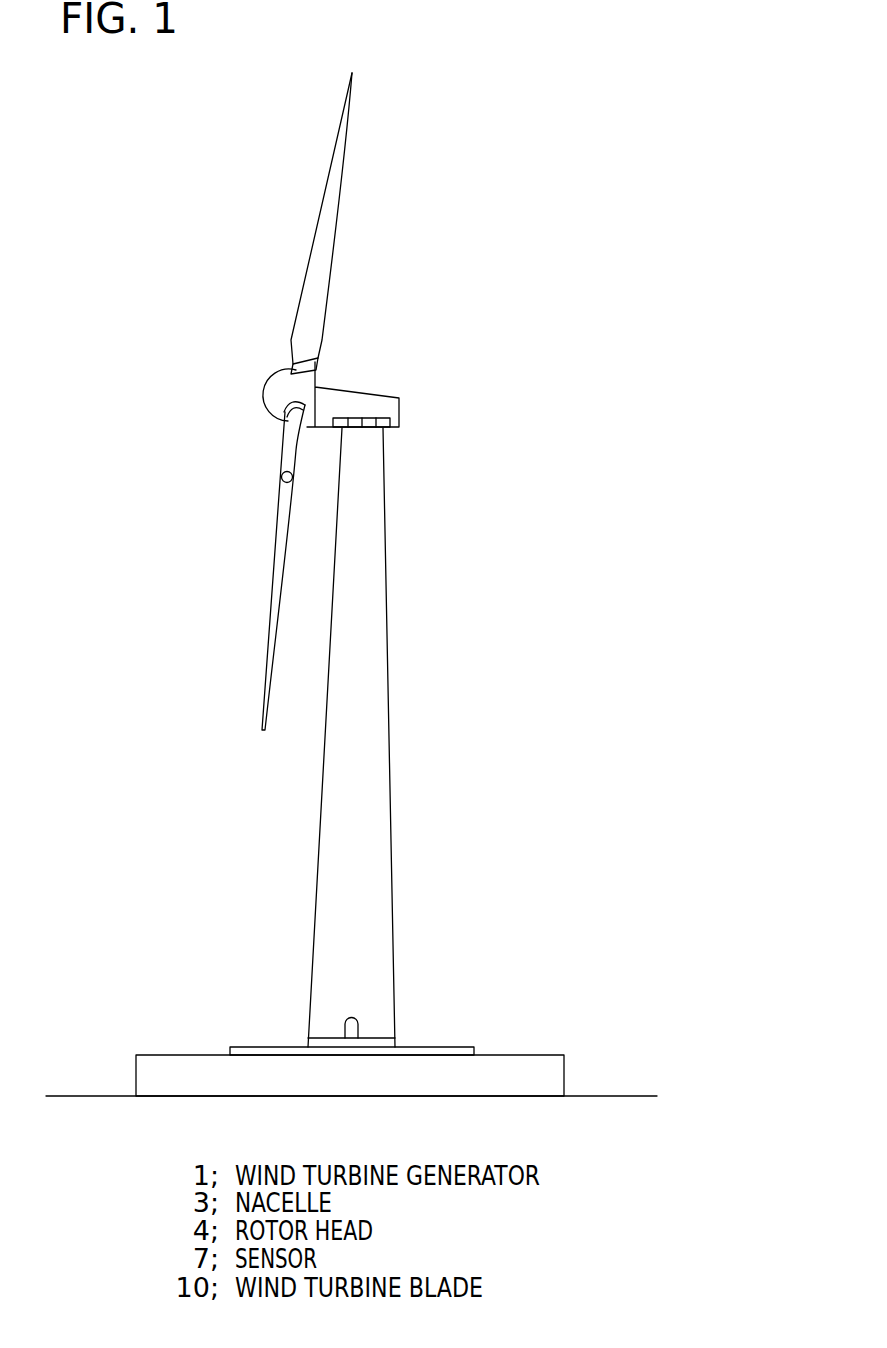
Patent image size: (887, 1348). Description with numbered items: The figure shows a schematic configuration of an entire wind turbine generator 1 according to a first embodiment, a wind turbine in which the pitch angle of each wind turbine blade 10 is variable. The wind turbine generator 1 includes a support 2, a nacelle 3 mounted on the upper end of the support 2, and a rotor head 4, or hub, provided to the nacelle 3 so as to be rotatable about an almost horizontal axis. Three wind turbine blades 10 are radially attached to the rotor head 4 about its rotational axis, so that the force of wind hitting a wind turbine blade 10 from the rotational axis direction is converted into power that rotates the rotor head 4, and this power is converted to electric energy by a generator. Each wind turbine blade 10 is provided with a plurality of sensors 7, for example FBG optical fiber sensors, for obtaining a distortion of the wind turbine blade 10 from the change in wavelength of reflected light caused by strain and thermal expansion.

The wind turbine generator 1 is at (475, 115).
The support 2 is at (388, 750).
The nacelle 3 is at (346, 377).
The rotor head 4 is at (275, 391).
The sensor 7 is at (281, 474).
The wind turbine blade 10 is at (326, 213).